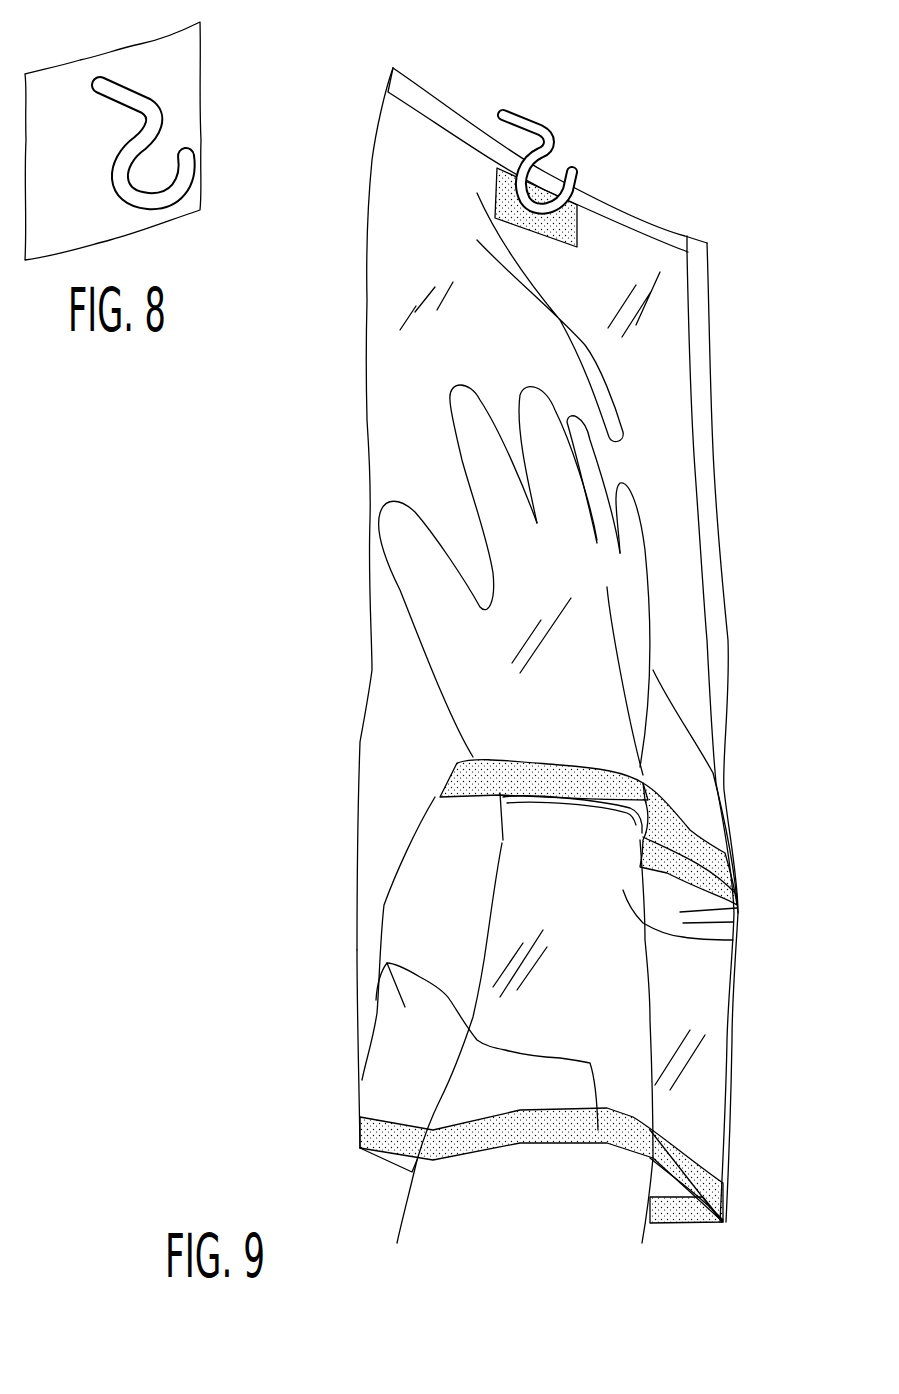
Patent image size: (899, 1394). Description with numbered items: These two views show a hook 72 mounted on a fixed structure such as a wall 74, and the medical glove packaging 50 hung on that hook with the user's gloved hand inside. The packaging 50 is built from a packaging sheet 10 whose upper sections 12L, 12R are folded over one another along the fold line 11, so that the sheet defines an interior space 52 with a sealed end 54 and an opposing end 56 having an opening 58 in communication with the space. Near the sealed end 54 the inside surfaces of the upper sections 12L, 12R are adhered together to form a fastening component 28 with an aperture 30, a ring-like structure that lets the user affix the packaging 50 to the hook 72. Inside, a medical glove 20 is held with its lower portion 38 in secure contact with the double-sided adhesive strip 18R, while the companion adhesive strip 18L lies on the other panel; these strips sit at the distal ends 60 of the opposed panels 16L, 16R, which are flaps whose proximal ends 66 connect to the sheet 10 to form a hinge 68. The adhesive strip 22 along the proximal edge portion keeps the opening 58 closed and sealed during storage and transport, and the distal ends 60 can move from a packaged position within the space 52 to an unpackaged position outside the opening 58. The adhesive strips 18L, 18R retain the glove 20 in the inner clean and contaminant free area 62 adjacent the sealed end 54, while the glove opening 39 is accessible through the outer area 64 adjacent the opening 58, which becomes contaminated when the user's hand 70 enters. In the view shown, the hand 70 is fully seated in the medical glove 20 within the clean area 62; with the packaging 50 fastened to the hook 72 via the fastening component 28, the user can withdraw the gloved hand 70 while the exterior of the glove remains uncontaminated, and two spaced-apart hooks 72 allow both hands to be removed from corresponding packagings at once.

In FIG. 9, the packaging sheet 10 is at (366, 364).
In FIG. 9, the fold line 11 is at (393, 68).
In FIG. 9, the upper section 12L is at (700, 288).
In FIG. 9, the upper section 12R is at (713, 352).
In FIG. 9, the panel 16L is at (400, 921).
In FIG. 9, the panel 16R is at (673, 1190).
In FIG. 9, the double-sided adhesive strip 18L is at (440, 783).
In FIG. 9, the double-sided adhesive strip 18R is at (478, 810).
In FIG. 9, the medical glove 20 is at (645, 575).
In FIG. 9, the double-sided adhesive strip 22 is at (358, 1123).
In FIG. 9, the fastening component 28 is at (570, 230).
In FIG. 9, the aperture 30 is at (552, 166).
In FIG. 9, the lower portion 38 is at (632, 765).
In FIG. 9, the opening 39 is at (643, 838).
In FIG. 9, the medical glove packaging 50 is at (337, 617).
In FIG. 9, the interior space 52 is at (428, 381).
In FIG. 9, the sealed end 54 is at (452, 104).
In FIG. 9, the opposing end 56 is at (688, 1238).
In FIG. 9, the opening 58 is at (698, 1214).
In FIG. 9, the distal end 60 is at (460, 757).
In FIG. 9, the inner clean and contaminant free area 62 is at (392, 445).
In FIG. 9, the outer area 64 is at (422, 868).
In FIG. 9, the proximal end 66 is at (368, 1106).
In FIG. 9, the hinge 68 is at (390, 1174).
In FIG. 9, the user's hand 70 is at (733, 940).
In FIG. 8, the hook 72 is at (178, 168).
In FIG. 9, the hook 72 is at (518, 118).
In FIG. 8, the wall 74 is at (184, 52).